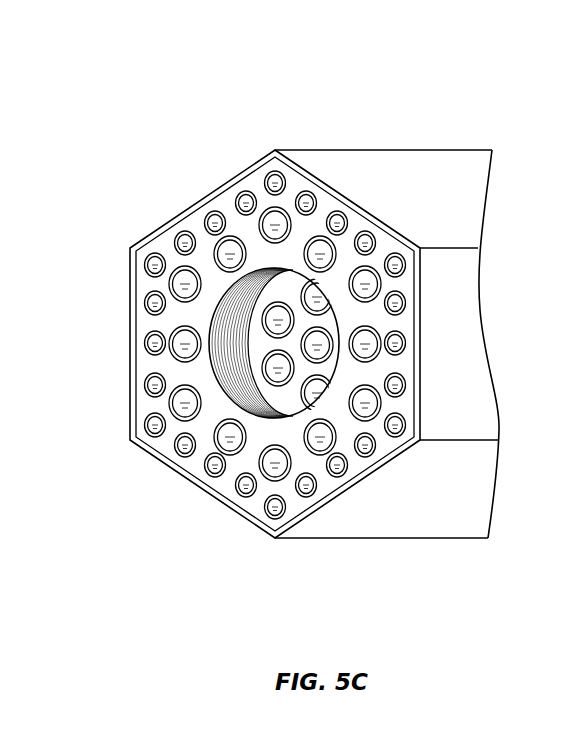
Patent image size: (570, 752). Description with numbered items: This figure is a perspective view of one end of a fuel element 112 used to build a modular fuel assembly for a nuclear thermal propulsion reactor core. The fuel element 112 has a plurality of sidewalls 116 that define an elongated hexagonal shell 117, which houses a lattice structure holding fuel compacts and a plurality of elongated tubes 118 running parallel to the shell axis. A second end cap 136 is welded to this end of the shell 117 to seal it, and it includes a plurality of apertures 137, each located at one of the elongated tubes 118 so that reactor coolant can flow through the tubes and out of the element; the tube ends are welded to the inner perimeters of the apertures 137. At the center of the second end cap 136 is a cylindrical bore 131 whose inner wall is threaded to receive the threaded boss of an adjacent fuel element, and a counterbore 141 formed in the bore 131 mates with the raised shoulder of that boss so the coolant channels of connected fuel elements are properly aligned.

The fuel element 112 is at (359, 113).
The sidewall 116 is at (443, 168).
The shell 117 is at (367, 553).
The elongated tube 118 is at (370, 352).
The cylindrical bore 131 is at (260, 407).
The second end cap 136 is at (258, 506).
The aperture 137 is at (393, 283).
The counterbore 141 is at (217, 373).